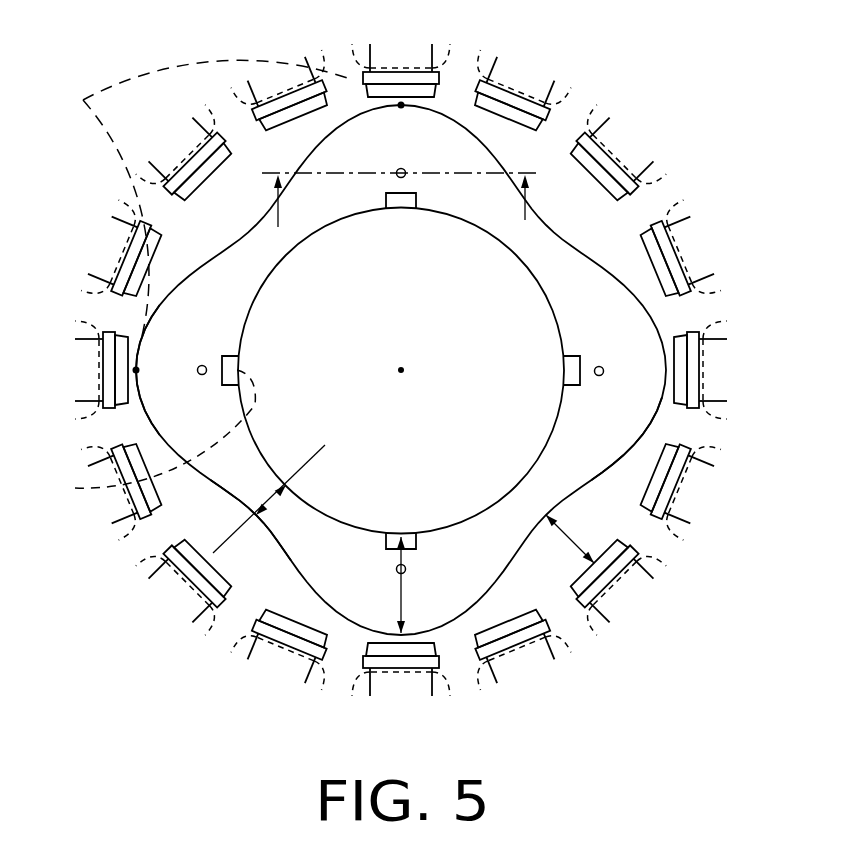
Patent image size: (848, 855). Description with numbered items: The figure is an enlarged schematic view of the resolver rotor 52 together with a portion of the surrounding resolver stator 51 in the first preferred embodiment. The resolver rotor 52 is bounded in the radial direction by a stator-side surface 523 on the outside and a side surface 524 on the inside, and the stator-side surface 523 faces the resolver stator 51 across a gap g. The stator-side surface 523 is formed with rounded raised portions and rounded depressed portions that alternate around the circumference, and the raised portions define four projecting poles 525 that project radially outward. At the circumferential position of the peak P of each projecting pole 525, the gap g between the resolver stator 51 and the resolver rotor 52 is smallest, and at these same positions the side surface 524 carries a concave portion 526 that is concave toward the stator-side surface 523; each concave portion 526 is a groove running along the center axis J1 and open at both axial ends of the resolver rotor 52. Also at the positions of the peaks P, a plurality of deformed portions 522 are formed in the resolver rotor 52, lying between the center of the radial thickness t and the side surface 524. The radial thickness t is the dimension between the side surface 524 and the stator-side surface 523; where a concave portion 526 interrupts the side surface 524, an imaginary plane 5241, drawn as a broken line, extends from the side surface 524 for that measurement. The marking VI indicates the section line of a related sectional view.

The resolver stator 51 is at (729, 539).
The resolver rotor 52 is at (636, 271).
The deformed portion 522 is at (405, 171).
The stator-side surface 523 is at (150, 421).
The side surface 524 is at (255, 495).
The imaginary plane 5241 is at (131, 440).
The projecting pole 525 is at (433, 133).
The concave portion 526 is at (620, 437).
The peak P is at (200, 200).
The center axis J1 is at (403, 369).
The section line VI- VI is at (401, 213).
The radial thickness t is at (390, 586).
The gap g is at (562, 550).